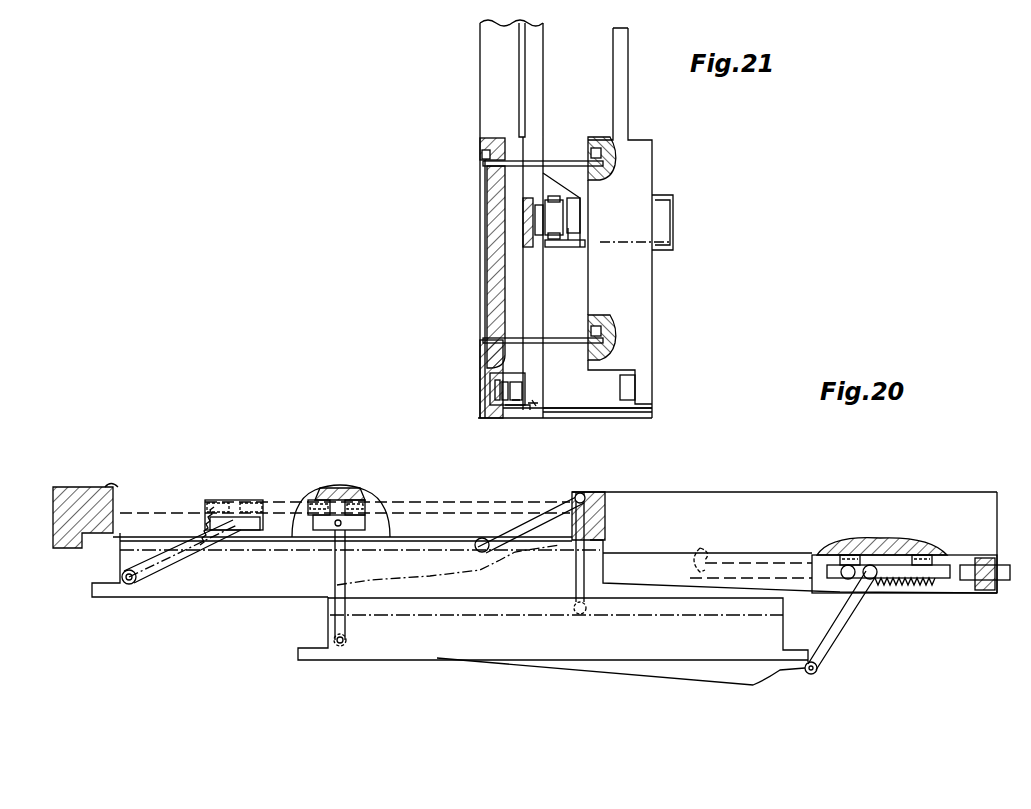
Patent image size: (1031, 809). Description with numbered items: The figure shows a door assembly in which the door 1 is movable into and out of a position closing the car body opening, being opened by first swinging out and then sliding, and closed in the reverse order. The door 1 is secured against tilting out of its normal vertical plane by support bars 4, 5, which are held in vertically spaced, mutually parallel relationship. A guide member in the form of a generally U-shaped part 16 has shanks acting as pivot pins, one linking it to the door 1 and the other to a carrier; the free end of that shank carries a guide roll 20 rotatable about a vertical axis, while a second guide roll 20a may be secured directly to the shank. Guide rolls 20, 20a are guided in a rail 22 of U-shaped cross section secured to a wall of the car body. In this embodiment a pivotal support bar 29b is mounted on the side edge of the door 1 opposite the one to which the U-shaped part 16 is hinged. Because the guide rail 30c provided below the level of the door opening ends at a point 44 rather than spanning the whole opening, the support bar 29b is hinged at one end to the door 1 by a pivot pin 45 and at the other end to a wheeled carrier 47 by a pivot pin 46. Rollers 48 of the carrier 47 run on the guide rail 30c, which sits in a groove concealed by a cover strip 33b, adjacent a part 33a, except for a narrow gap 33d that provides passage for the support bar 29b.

In FIG. 20, the door 1 is at (438, 650).
In FIG. 21, the support bar 4 is at (553, 162).
In FIG. 21, the support bar 5 is at (556, 340).
In FIG. 21, the U-shaped part 16 is at (620, 244).
In FIG. 20, the U-shaped part 16 is at (835, 625).
In FIG. 20, the guide roll 20 is at (848, 557).
In FIG. 20, the second guide roll 20a is at (872, 572).
In FIG. 20, the rail 22 is at (1003, 570).
In FIG. 21, the pivotal support bar 29b is at (603, 410).
In FIG. 20, the pivotal support bar 29b is at (340, 572).
In FIG. 21, the guide rail 30c is at (482, 408).
In FIG. 20, the guide rail 30c is at (453, 508).
In FIG. 21, the bearing block 33a is at (490, 380).
In FIG. 21, the cover strip 33b is at (525, 376).
In FIG. 21, the narrow gap 33d is at (543, 406).
In FIG. 20, the end point of guide rail 44 is at (205, 502).
In FIG. 20, the pivot pin 45 is at (345, 646).
In FIG. 20, the pivot pin 46 is at (320, 545).
In FIG. 21, the wheeled carrier 47 is at (520, 402).
In FIG. 20, the wheeled carrier 47 is at (357, 520).
In FIG. 20, the rollers 48 is at (317, 502).